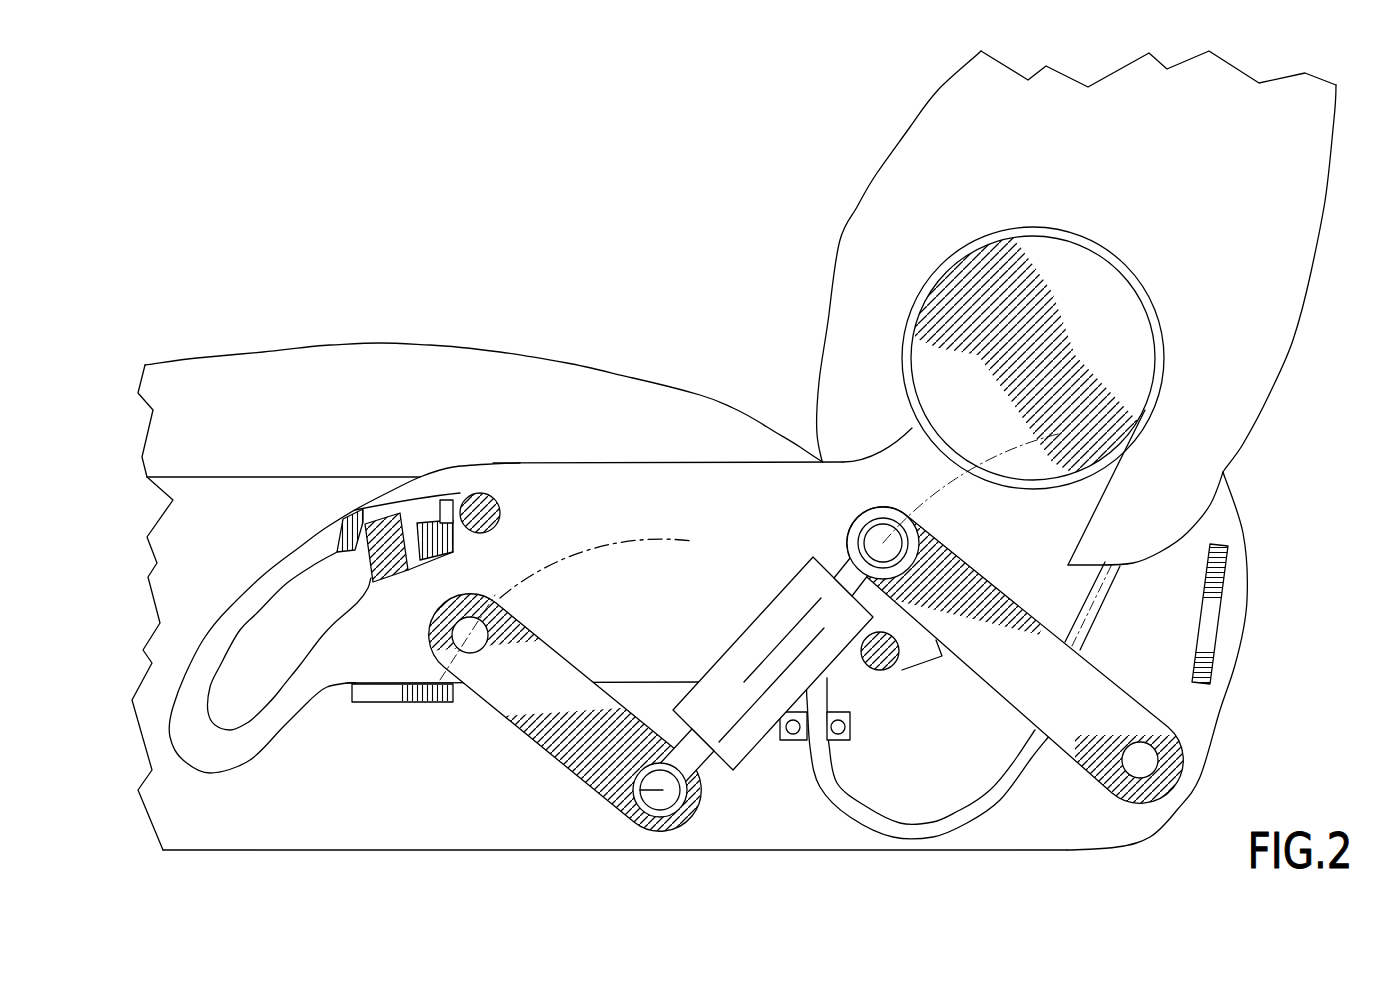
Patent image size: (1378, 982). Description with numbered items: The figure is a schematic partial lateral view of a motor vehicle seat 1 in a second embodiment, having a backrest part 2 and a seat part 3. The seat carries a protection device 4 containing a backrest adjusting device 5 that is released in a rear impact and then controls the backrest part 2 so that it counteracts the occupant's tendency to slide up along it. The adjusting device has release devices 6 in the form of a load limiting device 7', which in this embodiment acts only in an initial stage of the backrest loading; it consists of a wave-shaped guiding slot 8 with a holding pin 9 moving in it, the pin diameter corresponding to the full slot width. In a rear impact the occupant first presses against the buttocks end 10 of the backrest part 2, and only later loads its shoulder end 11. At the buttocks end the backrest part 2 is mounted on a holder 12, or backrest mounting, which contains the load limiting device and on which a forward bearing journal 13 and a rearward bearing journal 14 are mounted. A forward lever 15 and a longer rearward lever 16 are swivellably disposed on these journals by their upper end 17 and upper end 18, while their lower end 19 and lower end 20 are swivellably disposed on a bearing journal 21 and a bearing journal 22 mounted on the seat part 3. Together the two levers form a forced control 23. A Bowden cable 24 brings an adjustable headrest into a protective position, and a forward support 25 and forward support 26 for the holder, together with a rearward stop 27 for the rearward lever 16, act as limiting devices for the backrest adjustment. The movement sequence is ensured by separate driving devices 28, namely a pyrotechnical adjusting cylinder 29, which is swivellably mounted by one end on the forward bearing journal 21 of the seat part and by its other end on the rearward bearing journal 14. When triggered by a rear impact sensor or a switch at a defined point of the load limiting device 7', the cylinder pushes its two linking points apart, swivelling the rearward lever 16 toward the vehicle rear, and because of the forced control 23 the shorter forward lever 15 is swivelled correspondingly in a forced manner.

The motor vehicle seat 1 is at (628, 223).
The backrest part 2 is at (1194, 184).
The seat part 3 is at (248, 425).
The protection device 4 is at (1295, 618).
The backrest adjusting device 5 is at (464, 765).
The release devices 6 is at (432, 441).
The load limiting device 7' is at (372, 498).
The guiding slot 8 is at (322, 578).
The holding pin 9 is at (480, 493).
The buttocks end 10 is at (1137, 515).
The shoulder end 11 is at (1115, 34).
The holder 12 is at (205, 750).
The forward bearing journal 13 is at (472, 634).
The rearward bearing journal 14 is at (868, 528).
The forward lever 15 is at (548, 723).
The rearward lever 16 is at (996, 666).
The upper end 17 is at (428, 630).
The upper end 18 is at (884, 494).
The lower end 19 is at (677, 817).
The lower end 20 is at (1140, 812).
The bearing journal 21 is at (643, 791).
The bearing journal 22 is at (1140, 760).
The forced control 23 is at (816, 530).
The Bowden cable 24 is at (863, 810).
The forward support 25 is at (380, 702).
The forward support 26 is at (882, 636).
The rearward stop 27 is at (1207, 617).
The driving devices 28 is at (791, 597).
The pyrotechnical adjusting cylinder 29 is at (709, 732).